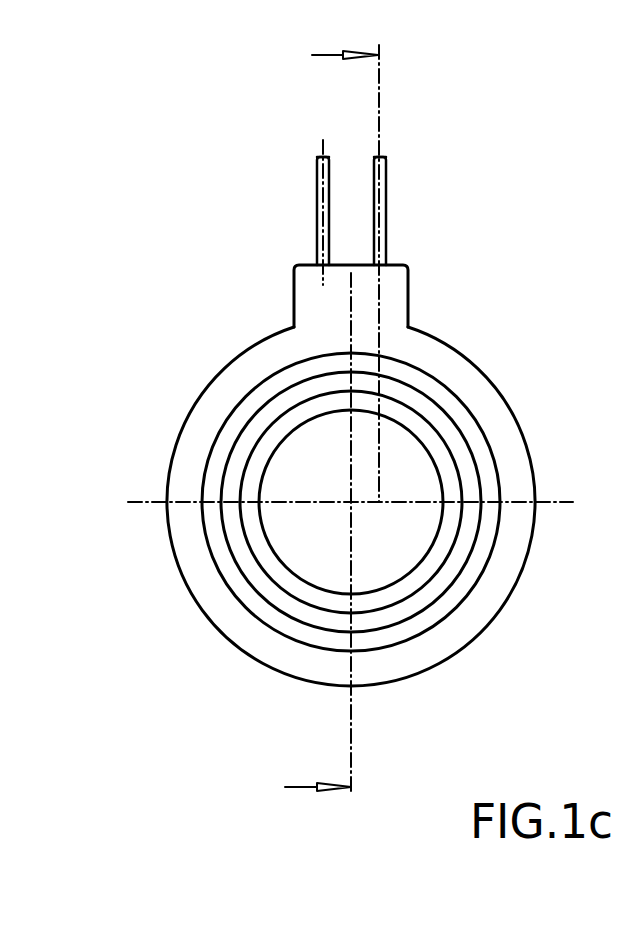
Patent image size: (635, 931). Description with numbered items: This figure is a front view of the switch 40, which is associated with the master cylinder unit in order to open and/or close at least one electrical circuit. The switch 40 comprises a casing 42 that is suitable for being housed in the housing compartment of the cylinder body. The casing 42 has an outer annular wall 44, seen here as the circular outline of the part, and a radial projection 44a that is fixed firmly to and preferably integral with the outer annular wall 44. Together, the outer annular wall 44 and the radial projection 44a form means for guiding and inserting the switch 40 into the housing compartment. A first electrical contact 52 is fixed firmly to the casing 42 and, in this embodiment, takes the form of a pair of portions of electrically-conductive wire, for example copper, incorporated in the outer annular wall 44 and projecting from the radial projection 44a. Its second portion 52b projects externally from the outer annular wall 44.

The switch 40 is at (233, 260).
The casing 42 is at (193, 605).
The outer annular wall 44 is at (493, 410).
The radial projection 44a is at (410, 303).
The first electrical contact 52 is at (388, 208).
The second portion 52b is at (316, 176).